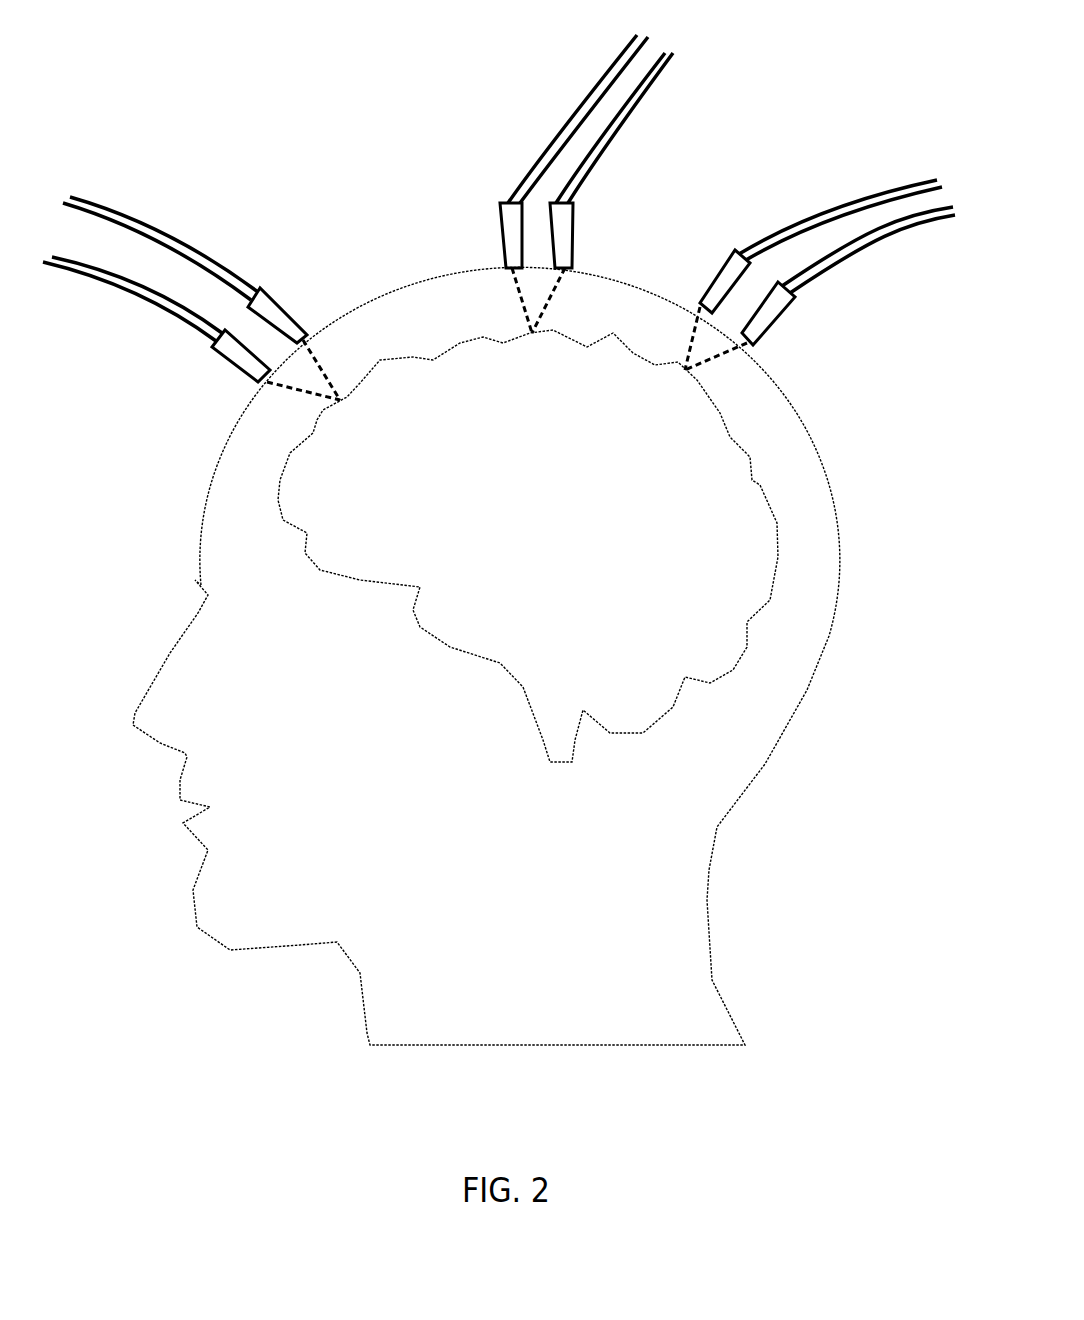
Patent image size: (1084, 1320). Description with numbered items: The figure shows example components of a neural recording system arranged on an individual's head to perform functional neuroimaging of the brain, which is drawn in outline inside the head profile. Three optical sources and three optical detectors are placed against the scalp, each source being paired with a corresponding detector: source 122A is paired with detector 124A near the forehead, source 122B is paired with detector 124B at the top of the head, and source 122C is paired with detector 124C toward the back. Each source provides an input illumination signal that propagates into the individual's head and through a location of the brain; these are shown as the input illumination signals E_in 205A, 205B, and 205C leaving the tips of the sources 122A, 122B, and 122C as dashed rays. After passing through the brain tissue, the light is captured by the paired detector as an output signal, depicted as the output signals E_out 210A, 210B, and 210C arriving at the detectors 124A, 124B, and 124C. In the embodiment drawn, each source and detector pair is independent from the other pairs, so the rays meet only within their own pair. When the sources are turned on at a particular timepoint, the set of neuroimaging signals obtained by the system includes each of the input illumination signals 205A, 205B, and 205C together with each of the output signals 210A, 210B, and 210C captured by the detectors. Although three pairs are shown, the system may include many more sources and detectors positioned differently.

The source 122A is at (228, 360).
The detector 124A is at (292, 322).
The input illumination signal E_in 205A is at (272, 388).
The output signal E_out 210A is at (318, 343).
The source 122B is at (508, 222).
The detector 124B is at (660, 251).
The input illumination signal E_in 205B is at (518, 307).
The output signal E_out 210B is at (562, 303).
The source 122C is at (722, 273).
The detector 124C is at (777, 300).
The input illumination signal E_in 205C is at (684, 352).
The output signal E_out 210C is at (705, 372).